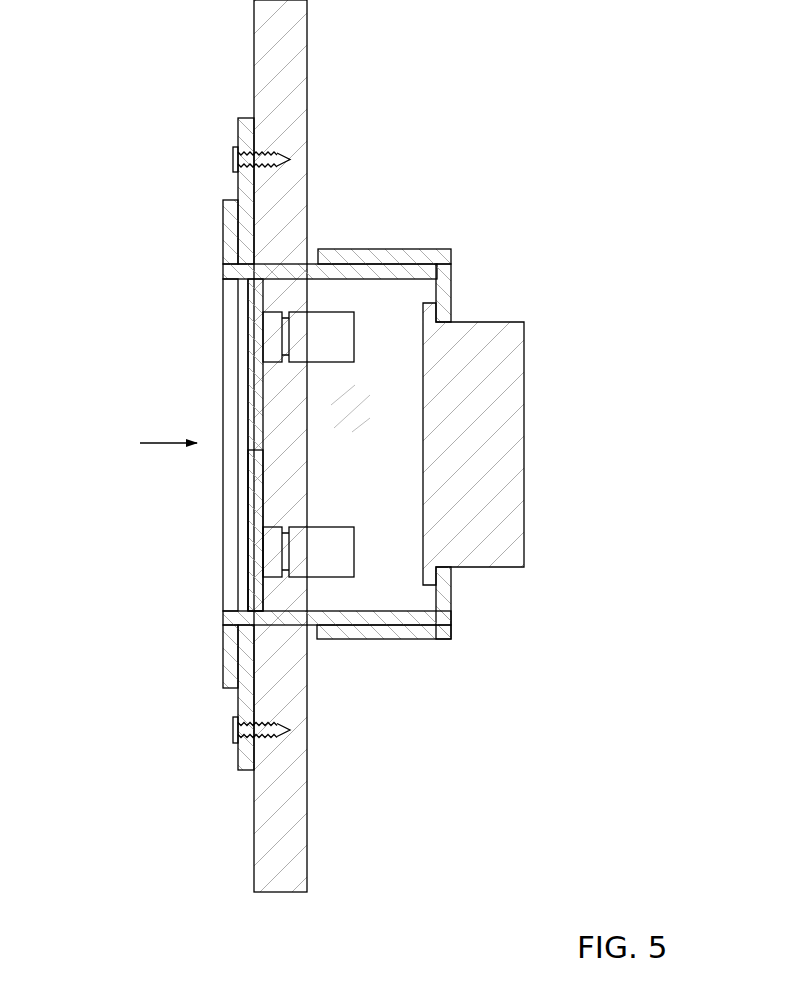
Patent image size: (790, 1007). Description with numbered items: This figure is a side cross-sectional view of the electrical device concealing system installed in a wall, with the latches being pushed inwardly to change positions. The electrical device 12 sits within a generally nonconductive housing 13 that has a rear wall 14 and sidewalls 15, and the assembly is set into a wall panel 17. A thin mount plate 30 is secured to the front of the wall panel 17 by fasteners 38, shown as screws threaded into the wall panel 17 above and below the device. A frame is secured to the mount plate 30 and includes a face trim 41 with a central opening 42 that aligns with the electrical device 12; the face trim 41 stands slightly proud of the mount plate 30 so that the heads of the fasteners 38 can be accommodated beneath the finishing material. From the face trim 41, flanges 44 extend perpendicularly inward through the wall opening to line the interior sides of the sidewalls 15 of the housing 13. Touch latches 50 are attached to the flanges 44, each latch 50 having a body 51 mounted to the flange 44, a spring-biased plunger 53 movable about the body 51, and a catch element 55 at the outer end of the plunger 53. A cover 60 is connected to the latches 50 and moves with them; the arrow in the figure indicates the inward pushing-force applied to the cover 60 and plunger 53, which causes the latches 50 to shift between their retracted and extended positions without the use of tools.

The electrical device 12 is at (482, 447).
The housing 13 is at (457, 613).
The rear wall 14 is at (451, 293).
The sidewalls 15 is at (395, 250).
The wall panel 17 is at (289, 45).
The mount plate 30 is at (248, 698).
The fasteners 38 is at (235, 162).
The face trim 41 is at (223, 225).
The opening 42 is at (233, 462).
The flanges 44 is at (388, 610).
The touch latches 50 is at (305, 524).
The body 51 is at (315, 328).
The spring-biased plunger 53 is at (274, 345).
The catch element 55 is at (250, 343).
The cover 60 is at (255, 583).